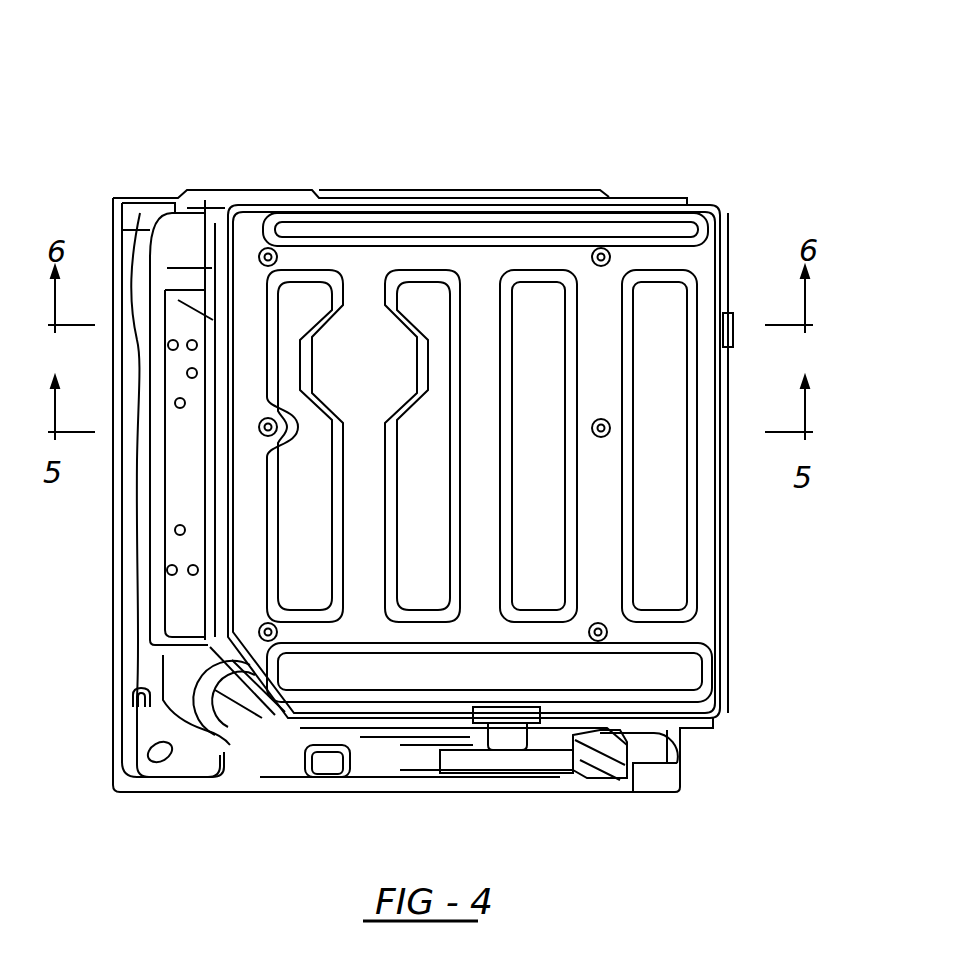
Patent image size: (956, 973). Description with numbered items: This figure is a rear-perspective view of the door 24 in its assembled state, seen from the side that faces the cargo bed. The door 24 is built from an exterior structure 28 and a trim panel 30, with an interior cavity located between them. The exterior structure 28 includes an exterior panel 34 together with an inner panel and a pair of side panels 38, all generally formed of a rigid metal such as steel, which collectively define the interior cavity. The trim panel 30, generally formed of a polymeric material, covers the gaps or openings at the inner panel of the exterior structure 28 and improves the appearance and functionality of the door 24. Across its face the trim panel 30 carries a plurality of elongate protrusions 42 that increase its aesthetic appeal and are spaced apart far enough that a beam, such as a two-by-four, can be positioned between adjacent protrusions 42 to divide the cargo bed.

The door 24 is at (740, 88).
The exterior structure 28 is at (222, 800).
The trim panel 30 is at (695, 263).
The exterior panel 34 is at (215, 198).
The side panel 38 is at (167, 703).
The elongate protrusion 42 is at (426, 297).